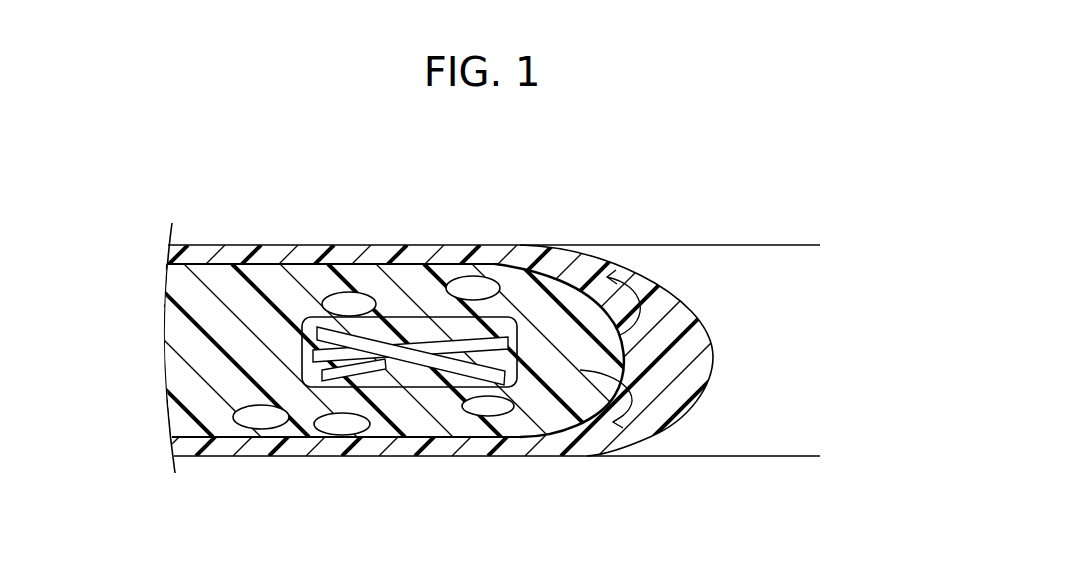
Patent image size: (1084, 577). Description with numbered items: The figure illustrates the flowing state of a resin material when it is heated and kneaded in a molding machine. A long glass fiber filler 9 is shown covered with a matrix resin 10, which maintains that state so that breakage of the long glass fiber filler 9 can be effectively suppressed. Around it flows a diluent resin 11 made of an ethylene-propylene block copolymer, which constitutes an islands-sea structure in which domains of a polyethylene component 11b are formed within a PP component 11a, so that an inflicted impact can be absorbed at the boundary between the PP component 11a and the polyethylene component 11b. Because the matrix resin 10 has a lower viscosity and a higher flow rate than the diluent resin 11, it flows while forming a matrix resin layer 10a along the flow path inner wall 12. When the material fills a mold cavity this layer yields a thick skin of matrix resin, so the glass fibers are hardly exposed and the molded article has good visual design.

The long glass fiber filler 9 is at (381, 362).
The matrix resin 10 is at (665, 297).
The matrix resin layer 10a is at (413, 255).
The diluent resin 11 is at (569, 279).
The PP component 11a is at (578, 400).
The polyethylene component 11b is at (330, 292).
The flow path inner wall 12 is at (485, 258).